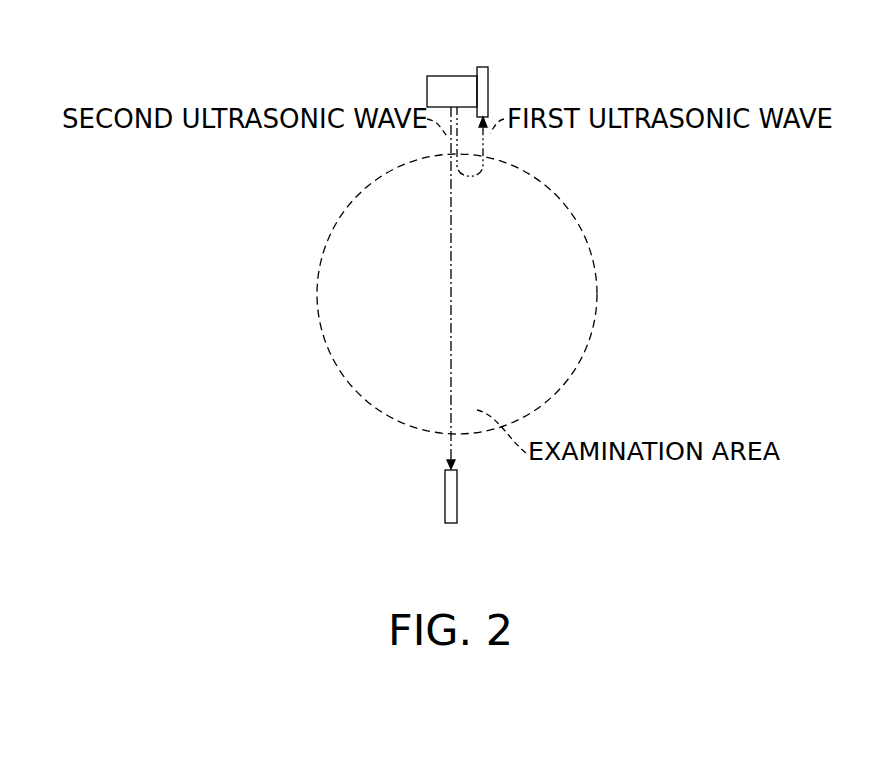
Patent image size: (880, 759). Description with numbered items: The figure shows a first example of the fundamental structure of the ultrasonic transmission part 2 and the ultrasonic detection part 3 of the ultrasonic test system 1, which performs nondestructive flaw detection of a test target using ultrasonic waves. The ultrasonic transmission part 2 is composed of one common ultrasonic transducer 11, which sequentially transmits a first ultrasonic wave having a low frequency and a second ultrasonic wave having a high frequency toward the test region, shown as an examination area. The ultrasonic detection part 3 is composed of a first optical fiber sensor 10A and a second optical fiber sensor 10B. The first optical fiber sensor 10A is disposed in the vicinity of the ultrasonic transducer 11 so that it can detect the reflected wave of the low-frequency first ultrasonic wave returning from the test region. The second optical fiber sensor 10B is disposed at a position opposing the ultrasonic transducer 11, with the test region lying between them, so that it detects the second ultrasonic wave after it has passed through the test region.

The ultrasonic test system 1 is at (466, 62).
The ultrasonic transmission part 2 is at (425, 66).
The ultrasonic detection part 3 is at (518, 82).
The ultrasonic transducer 11 is at (427, 92).
The first optical fiber sensor 10A is at (490, 103).
The second optical fiber sensor 10B is at (458, 497).